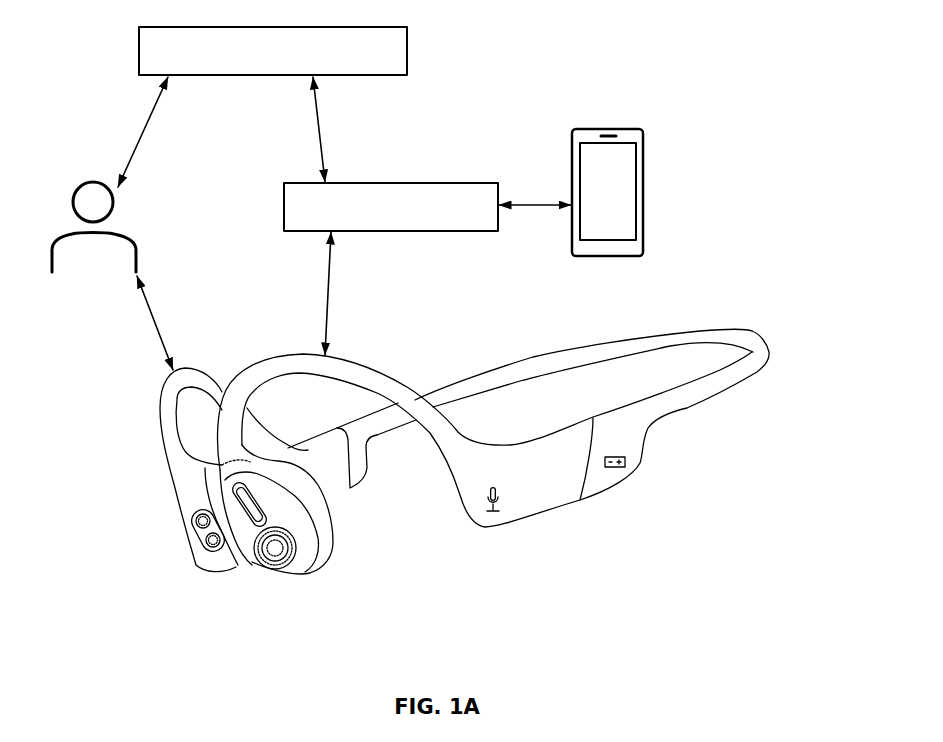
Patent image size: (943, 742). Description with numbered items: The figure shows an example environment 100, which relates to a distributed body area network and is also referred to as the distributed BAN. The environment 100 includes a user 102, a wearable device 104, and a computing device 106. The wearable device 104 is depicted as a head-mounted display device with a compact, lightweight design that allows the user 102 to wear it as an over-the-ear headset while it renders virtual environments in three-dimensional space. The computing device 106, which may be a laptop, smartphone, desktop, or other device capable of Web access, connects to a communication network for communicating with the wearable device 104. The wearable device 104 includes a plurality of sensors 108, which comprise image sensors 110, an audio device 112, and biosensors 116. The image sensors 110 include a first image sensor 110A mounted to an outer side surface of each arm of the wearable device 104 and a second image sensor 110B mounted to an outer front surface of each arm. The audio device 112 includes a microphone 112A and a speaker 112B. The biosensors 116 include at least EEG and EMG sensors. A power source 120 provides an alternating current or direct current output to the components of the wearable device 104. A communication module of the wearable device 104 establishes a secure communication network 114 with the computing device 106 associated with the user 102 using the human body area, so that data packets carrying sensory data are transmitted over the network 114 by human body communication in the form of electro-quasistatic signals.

The environment 100 is at (702, 584).
The user 102 is at (84, 184).
The wearable device 104 is at (746, 372).
The computing device 106 is at (607, 192).
The sensors 108 is at (259, 572).
The image sensors 110 is at (191, 525).
The first image sensor 110A is at (285, 563).
The second image sensor 110B is at (208, 527).
The audio device 112 is at (497, 515).
The microphone 112A is at (507, 502).
The speaker 112B is at (247, 505).
The network 114 is at (391, 207).
The biosensors 116 is at (273, 51).
The power source 120 is at (625, 462).